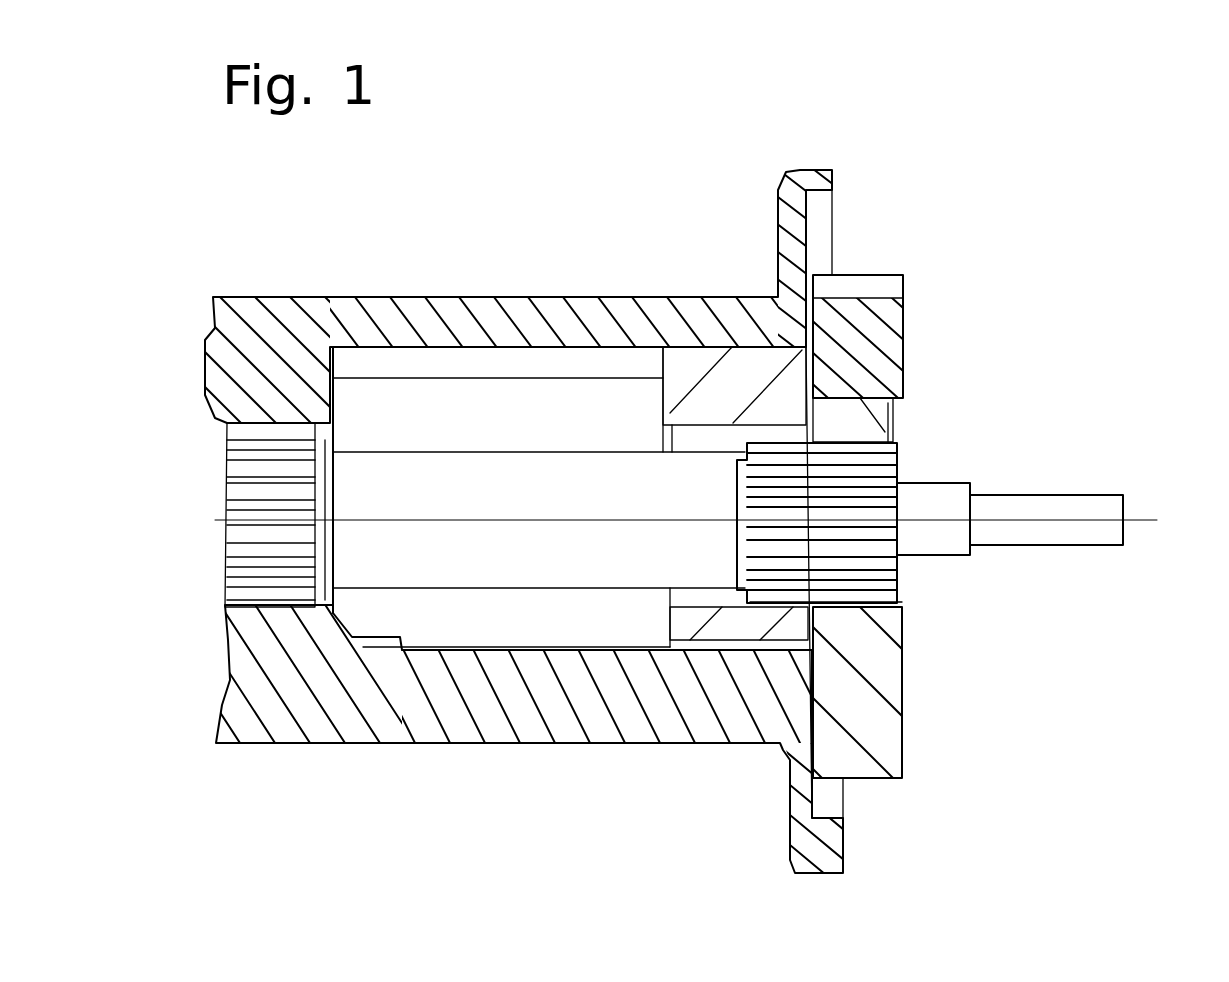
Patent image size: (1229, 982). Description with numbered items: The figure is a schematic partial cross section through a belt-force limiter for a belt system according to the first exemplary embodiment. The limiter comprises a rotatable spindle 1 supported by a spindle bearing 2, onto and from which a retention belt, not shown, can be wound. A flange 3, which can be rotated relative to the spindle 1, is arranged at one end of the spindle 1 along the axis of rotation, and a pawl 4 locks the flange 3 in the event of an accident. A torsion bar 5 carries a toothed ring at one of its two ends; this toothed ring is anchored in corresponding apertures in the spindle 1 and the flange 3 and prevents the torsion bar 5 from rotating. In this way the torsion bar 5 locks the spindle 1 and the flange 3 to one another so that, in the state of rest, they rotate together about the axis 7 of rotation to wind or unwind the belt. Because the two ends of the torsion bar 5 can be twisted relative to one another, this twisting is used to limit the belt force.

The spindle 1 is at (473, 330).
The spindle bearing 2 is at (737, 370).
The flange 3 is at (890, 345).
The pawl 4 is at (897, 412).
The torsion bar 5 is at (950, 498).
The axis of rotation 7 is at (1143, 520).